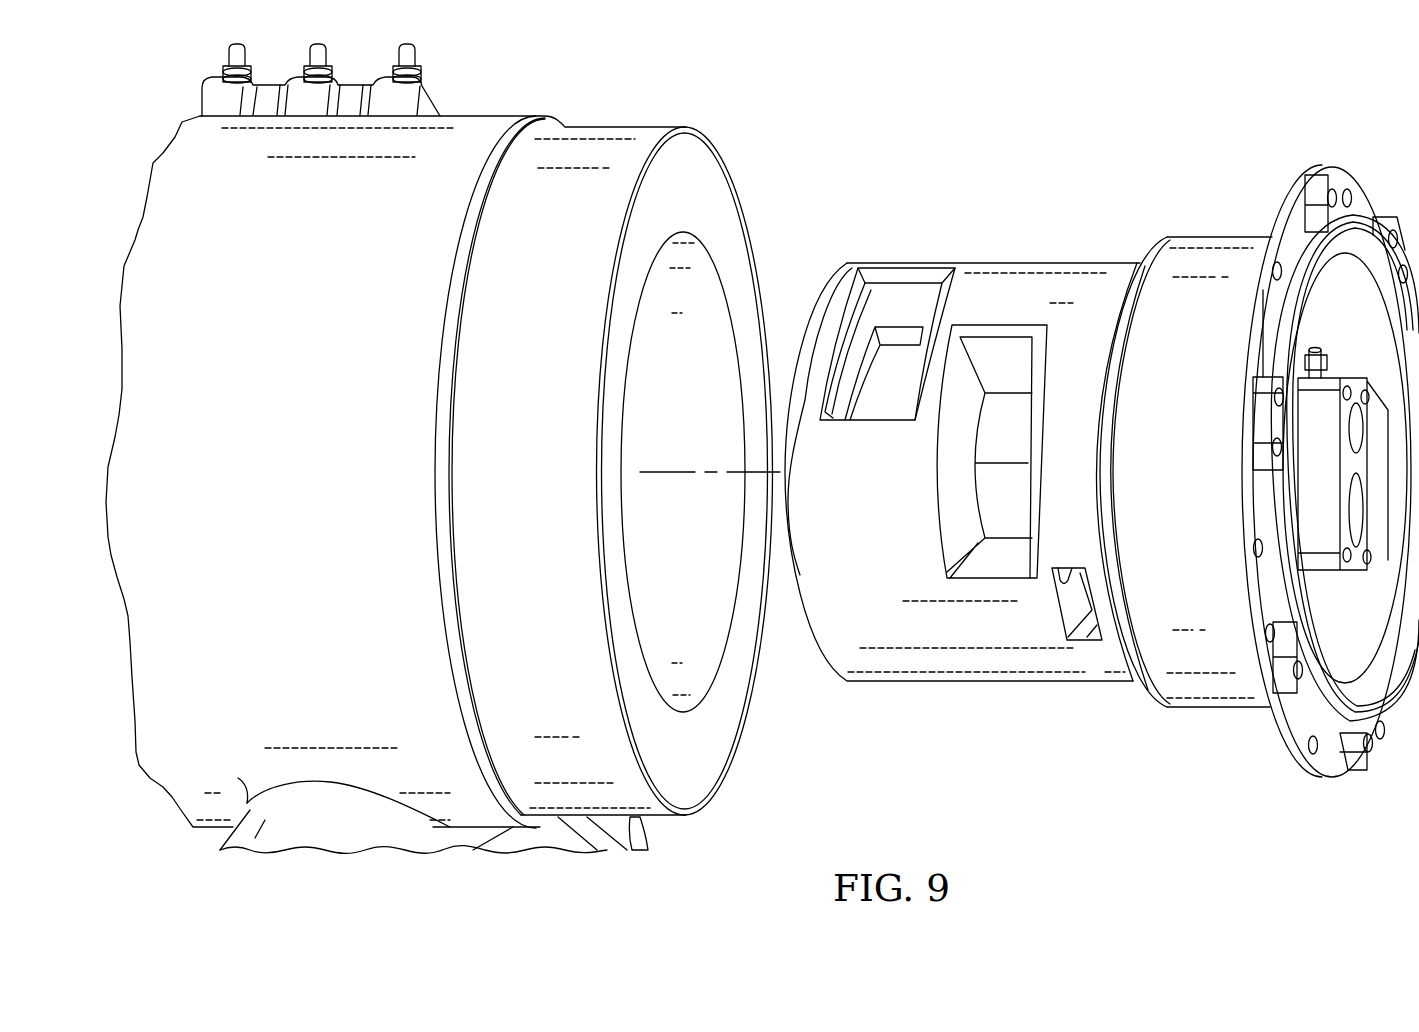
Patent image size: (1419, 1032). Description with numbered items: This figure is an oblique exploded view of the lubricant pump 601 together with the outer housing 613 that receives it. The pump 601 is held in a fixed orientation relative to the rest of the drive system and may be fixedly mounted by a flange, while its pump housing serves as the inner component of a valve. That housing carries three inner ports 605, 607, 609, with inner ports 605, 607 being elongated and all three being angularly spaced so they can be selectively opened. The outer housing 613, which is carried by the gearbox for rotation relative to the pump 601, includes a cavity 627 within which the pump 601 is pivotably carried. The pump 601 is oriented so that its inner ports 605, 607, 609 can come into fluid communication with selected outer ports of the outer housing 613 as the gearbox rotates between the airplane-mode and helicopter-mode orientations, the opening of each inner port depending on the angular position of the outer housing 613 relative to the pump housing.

The outer housing 613 is at (593, 118).
The cavity 627 is at (695, 283).
The inner port 605 is at (926, 297).
The inner port 607 is at (1037, 353).
The inner port 609 is at (1082, 638).
The pump 601 is at (1205, 220).